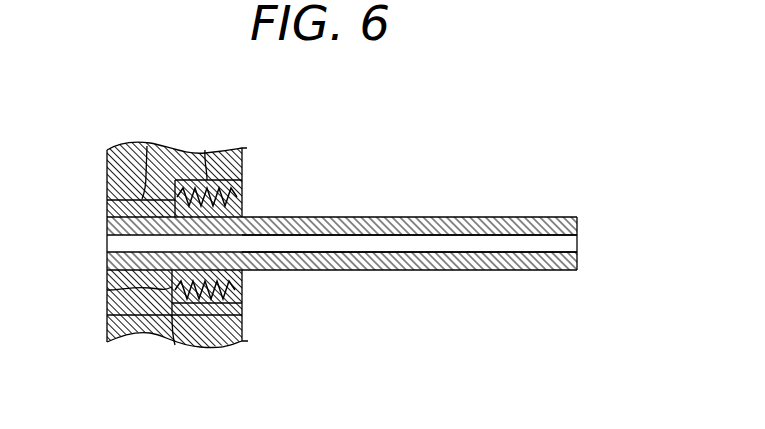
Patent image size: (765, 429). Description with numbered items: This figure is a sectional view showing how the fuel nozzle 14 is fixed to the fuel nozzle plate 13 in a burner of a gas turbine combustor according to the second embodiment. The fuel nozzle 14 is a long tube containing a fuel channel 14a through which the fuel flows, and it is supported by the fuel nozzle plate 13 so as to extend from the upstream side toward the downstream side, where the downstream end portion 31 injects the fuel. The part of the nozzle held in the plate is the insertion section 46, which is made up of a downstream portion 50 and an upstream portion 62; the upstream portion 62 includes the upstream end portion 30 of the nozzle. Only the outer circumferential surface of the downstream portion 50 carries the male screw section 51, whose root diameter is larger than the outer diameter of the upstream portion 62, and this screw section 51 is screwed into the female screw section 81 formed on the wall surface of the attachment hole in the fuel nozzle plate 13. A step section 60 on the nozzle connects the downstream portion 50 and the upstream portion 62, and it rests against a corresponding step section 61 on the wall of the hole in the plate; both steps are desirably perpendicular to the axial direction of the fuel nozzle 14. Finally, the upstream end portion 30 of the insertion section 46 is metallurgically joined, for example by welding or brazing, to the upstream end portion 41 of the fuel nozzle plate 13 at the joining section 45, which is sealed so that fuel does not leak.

The fuel nozzle plate 13 is at (106, 332).
The fuel nozzle 14 is at (385, 217).
The fuel channel 14a is at (565, 243).
The upstream end portion 30 is at (106, 232).
The downstream end portion 31 is at (578, 222).
The upstream end portion 41 is at (106, 194).
The joining section 45 is at (106, 211).
The insertion section 46 is at (175, 347).
The downstream portion 50 is at (205, 150).
The screw section 51 is at (242, 198).
The step section 60 is at (242, 290).
The step section 61 is at (107, 290).
The upstream portion 62 is at (147, 146).
The screw section 81 is at (242, 305).